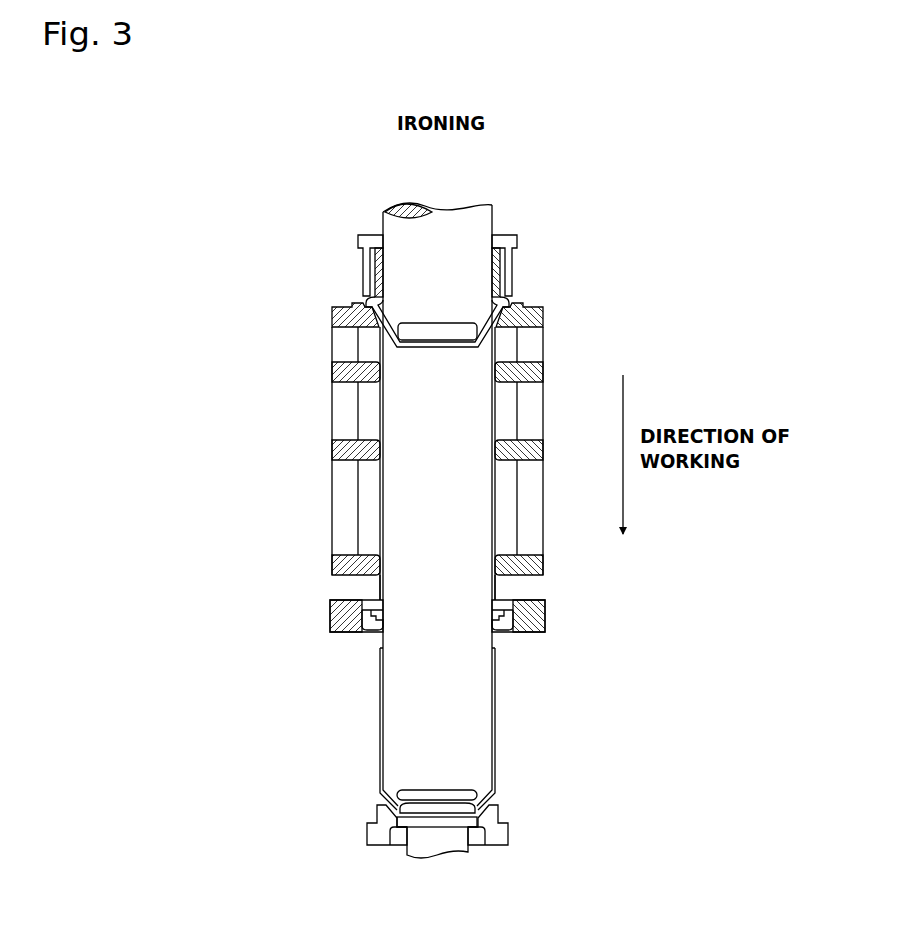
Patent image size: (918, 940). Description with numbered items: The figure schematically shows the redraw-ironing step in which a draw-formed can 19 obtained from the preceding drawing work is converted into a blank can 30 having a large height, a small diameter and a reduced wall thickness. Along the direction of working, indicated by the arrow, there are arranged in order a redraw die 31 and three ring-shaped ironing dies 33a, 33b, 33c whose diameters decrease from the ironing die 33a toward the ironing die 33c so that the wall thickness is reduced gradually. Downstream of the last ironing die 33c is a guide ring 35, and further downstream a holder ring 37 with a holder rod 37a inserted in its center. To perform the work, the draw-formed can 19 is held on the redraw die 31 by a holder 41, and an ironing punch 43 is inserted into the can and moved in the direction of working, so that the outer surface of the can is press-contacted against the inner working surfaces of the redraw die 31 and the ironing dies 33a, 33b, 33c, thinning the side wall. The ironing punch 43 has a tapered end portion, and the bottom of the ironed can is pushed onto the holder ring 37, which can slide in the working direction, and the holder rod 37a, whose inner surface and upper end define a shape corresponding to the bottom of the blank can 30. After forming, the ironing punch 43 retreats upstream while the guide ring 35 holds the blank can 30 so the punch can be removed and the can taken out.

The draw-formed can 19 is at (498, 331).
The blank can 30 is at (499, 757).
The redraw die 31 is at (341, 305).
The ironing die 33a is at (337, 371).
The ironing die 33b is at (337, 449).
The ironing die 33c is at (337, 564).
The guide ring 35 is at (547, 616).
The holder ring 37 is at (499, 831).
The holder rod 37a is at (416, 851).
The holder 41 is at (511, 234).
The ironing punch 43 is at (460, 225).